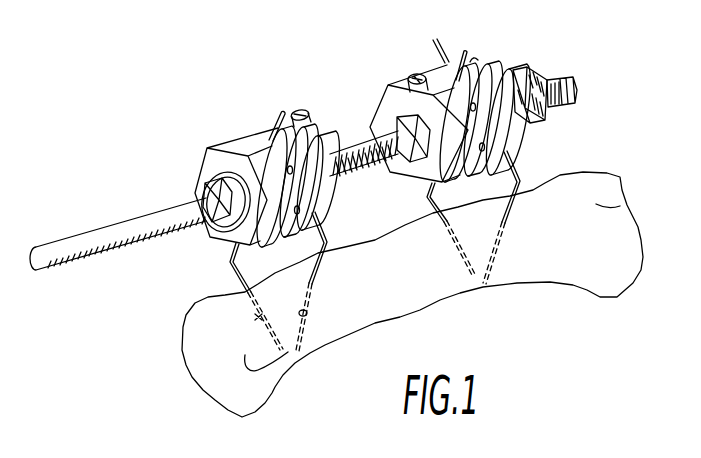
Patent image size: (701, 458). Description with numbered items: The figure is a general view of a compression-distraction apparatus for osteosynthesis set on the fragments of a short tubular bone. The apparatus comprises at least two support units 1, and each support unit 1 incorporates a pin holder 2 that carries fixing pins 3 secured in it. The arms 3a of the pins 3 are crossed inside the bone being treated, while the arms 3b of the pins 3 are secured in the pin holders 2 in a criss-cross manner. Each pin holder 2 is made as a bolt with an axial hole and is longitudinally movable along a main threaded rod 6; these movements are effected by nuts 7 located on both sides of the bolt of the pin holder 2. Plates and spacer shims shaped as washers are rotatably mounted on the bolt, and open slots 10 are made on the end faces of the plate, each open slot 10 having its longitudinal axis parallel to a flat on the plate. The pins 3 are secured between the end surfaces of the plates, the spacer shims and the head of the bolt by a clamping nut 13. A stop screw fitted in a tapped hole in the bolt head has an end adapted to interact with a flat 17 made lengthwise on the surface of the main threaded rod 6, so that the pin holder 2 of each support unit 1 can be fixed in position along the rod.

The support unit 1 is at (218, 266).
The pin holder 2 is at (287, 109).
The fixing pin 3 is at (318, 244).
The arm of the pin 3a is at (293, 300).
The arm of the pin 3b is at (258, 124).
The main threaded rod 6 is at (86, 257).
The nut 7 is at (208, 182).
The open slot 10 is at (416, 76).
The clamping nut 13 is at (222, 147).
The flat 17 is at (60, 243).